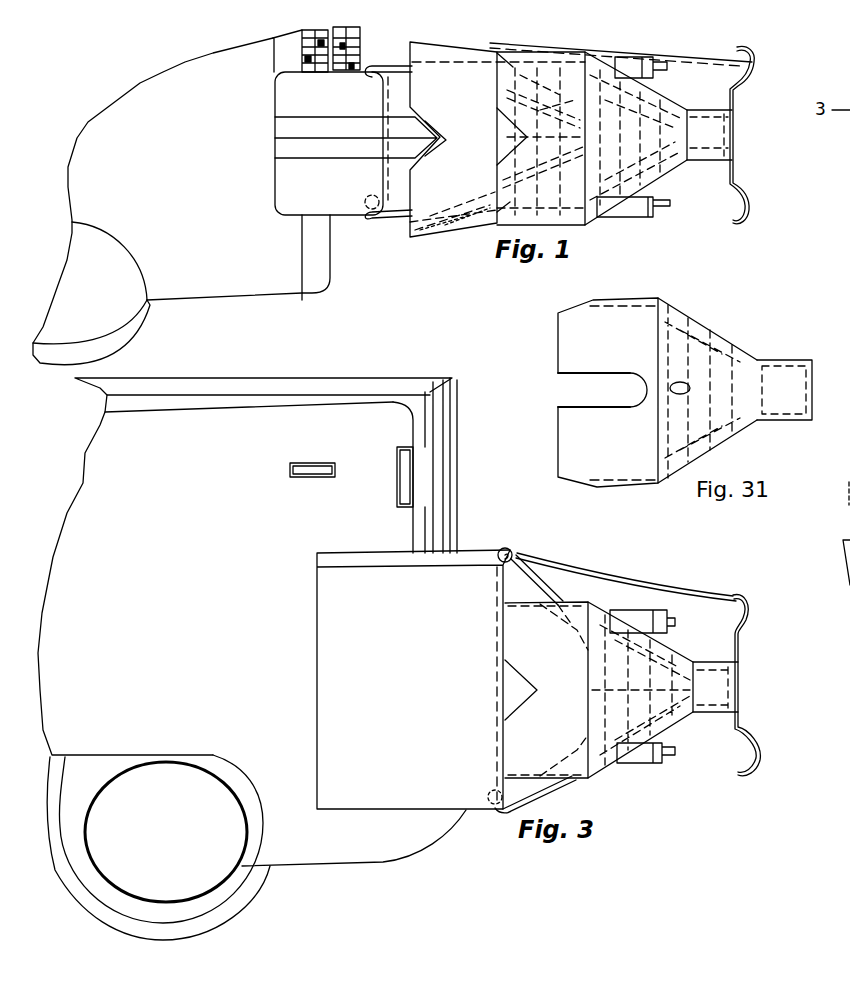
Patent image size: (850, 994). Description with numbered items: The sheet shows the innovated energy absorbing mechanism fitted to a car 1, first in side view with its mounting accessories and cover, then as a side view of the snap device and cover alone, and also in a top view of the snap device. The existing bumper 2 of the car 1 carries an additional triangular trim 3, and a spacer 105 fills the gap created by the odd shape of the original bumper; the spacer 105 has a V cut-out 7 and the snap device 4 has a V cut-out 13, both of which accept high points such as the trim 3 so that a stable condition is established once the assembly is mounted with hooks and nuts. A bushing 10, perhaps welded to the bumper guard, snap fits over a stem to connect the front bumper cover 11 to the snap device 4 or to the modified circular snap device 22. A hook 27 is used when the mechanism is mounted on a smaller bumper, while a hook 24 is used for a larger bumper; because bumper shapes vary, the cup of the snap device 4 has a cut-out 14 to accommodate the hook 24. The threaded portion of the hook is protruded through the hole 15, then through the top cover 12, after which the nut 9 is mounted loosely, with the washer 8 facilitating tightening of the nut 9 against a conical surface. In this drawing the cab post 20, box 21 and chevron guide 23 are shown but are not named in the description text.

In FIG. 1, the car 1 is at (303, 297).
In FIG. 1, the existing bumper 2 is at (340, 216).
In FIG. 1, the triangular trim 3 is at (334, 123).
In FIG. 1, the snap device 4 is at (571, 226).
In FIG. 1, the V cut-out 7 is at (439, 143).
In FIG. 1, the washer 8 is at (626, 218).
In FIG. 3, the washer 8 is at (633, 764).
In FIG. 1, the nut 9 is at (662, 67).
In FIG. 3, the nut 9 is at (667, 754).
In FIG. 1, the bushing 10 is at (712, 163).
In FIG. 3, the bushing 10 is at (713, 713).
In FIG. 1, the front bumper cover 11 is at (738, 162).
In FIG. 3, the front bumper cover 11 is at (742, 728).
In FIG. 1, the top cover 12 is at (690, 57).
In FIG. 31, the V cut-out 13 is at (558, 480).
In FIG. 31, the cut-out 14 is at (570, 404).
In FIG. 31, the hole 15 is at (690, 386).
In FIG. 3, the cab post 20 is at (455, 447).
In FIG. 3, the box 21 is at (413, 679).
In FIG. 3, the snap device 22 is at (672, 655).
In FIG. 3, the chevron guide 23 is at (527, 703).
In FIG. 3, the hook 24 is at (527, 562).
In FIG. 1, the hook 27 is at (385, 65).
In FIG. 1, the spacer 105 is at (425, 240).